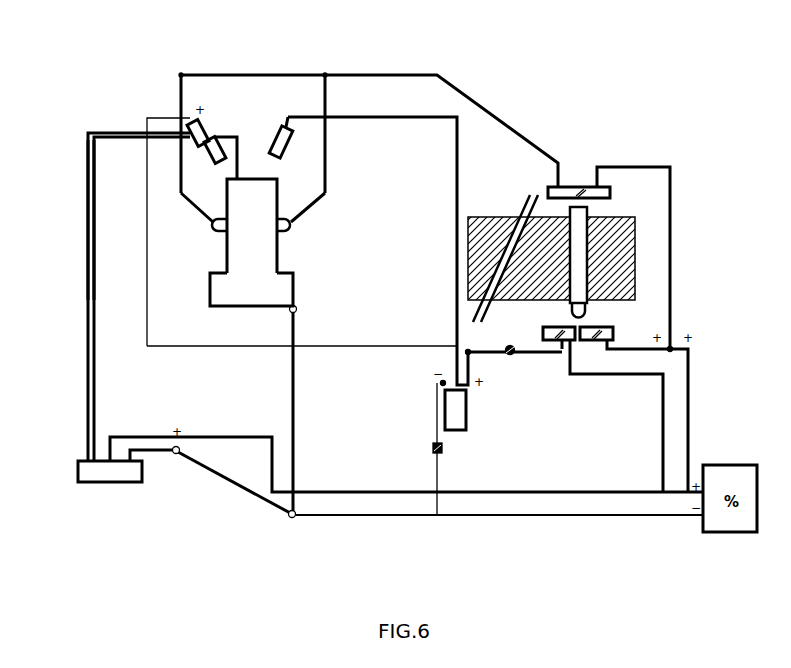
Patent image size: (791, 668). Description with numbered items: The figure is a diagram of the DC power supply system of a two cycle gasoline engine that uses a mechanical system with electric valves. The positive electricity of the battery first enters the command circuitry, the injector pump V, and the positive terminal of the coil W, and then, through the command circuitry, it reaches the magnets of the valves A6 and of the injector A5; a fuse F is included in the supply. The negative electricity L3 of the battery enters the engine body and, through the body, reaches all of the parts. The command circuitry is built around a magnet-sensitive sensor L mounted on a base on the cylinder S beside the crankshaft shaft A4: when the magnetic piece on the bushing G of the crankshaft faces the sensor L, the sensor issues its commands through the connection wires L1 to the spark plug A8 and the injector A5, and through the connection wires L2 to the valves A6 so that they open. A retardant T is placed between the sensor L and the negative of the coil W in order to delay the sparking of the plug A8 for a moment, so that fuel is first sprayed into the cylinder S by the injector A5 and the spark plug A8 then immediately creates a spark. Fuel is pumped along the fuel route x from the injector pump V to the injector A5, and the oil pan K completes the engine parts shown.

The injector A5 is at (190, 125).
The spark plug A8 is at (287, 118).
The valves A6 is at (290, 230).
The crankshaft shaft A4 is at (623, 275).
The negative electricity L3 is at (248, 163).
The connection wires between sensor and valves L2 is at (615, 162).
The connection wires between sensor, injector, and spark plug L1 is at (528, 353).
The sensor L is at (610, 192).
The cylinder S is at (277, 255).
The oil pan K is at (218, 307).
The bushing on the crankshaft shaft G is at (577, 242).
The retardant T is at (510, 354).
The coil W is at (445, 410).
The fuse F is at (433, 448).
The fuel route x is at (88, 297).
The injector pump V is at (93, 472).